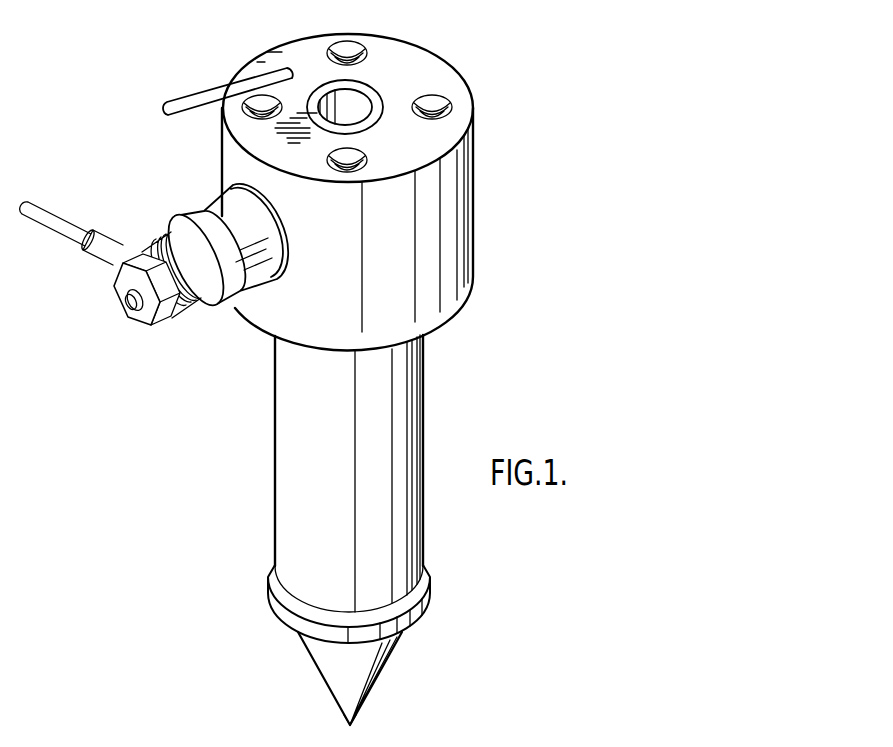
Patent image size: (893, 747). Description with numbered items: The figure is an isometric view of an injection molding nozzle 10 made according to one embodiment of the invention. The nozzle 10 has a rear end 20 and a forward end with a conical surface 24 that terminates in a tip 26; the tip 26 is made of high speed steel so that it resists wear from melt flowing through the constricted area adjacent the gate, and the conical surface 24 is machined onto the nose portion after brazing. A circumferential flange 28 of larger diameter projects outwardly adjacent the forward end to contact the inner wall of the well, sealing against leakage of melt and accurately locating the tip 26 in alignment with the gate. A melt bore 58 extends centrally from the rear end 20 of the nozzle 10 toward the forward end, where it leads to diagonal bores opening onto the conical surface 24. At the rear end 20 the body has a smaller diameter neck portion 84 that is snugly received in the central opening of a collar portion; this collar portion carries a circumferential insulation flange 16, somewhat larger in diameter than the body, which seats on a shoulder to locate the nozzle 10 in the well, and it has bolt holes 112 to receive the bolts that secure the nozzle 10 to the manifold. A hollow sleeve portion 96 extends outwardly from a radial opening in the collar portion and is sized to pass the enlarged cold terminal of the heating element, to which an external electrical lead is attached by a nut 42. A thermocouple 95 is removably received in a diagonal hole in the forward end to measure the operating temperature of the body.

The nozzle 10 is at (417, 373).
The insulation flange 16 is at (465, 227).
The rear end 20 is at (427, 137).
The conical surface 24 is at (393, 655).
The tip 26 is at (348, 724).
The circumferential flange 28 is at (430, 602).
The nut 42 is at (152, 325).
The melt bore 58 is at (330, 100).
The neck portion 84 is at (366, 87).
The thermocouple 95 is at (190, 95).
The hollow sleeve portion 96 is at (218, 212).
The bolt holes 112 is at (430, 97).